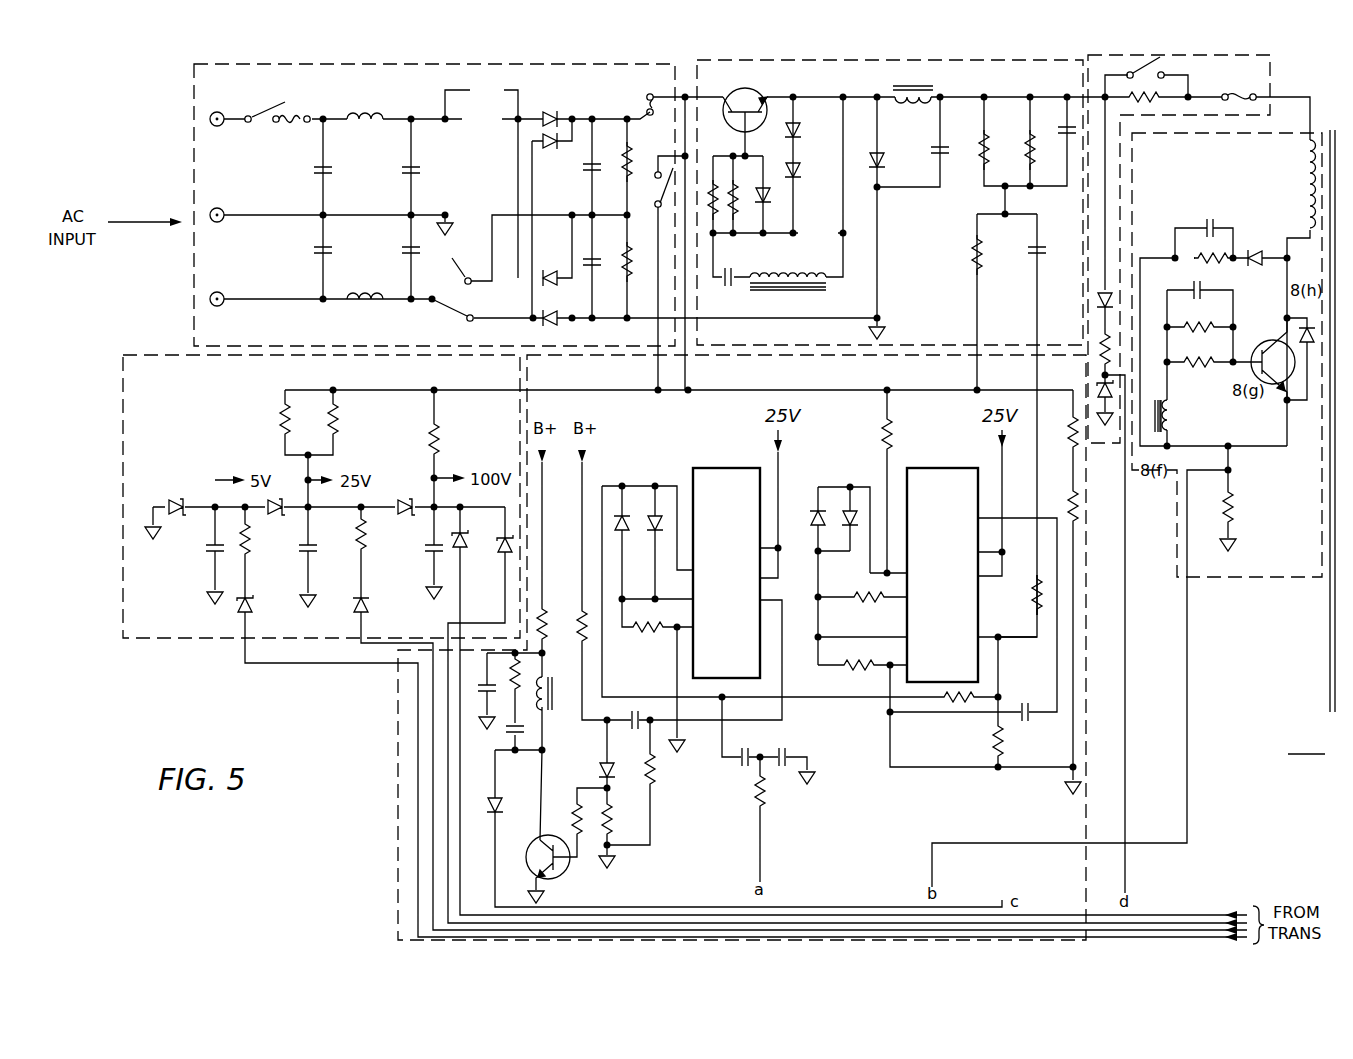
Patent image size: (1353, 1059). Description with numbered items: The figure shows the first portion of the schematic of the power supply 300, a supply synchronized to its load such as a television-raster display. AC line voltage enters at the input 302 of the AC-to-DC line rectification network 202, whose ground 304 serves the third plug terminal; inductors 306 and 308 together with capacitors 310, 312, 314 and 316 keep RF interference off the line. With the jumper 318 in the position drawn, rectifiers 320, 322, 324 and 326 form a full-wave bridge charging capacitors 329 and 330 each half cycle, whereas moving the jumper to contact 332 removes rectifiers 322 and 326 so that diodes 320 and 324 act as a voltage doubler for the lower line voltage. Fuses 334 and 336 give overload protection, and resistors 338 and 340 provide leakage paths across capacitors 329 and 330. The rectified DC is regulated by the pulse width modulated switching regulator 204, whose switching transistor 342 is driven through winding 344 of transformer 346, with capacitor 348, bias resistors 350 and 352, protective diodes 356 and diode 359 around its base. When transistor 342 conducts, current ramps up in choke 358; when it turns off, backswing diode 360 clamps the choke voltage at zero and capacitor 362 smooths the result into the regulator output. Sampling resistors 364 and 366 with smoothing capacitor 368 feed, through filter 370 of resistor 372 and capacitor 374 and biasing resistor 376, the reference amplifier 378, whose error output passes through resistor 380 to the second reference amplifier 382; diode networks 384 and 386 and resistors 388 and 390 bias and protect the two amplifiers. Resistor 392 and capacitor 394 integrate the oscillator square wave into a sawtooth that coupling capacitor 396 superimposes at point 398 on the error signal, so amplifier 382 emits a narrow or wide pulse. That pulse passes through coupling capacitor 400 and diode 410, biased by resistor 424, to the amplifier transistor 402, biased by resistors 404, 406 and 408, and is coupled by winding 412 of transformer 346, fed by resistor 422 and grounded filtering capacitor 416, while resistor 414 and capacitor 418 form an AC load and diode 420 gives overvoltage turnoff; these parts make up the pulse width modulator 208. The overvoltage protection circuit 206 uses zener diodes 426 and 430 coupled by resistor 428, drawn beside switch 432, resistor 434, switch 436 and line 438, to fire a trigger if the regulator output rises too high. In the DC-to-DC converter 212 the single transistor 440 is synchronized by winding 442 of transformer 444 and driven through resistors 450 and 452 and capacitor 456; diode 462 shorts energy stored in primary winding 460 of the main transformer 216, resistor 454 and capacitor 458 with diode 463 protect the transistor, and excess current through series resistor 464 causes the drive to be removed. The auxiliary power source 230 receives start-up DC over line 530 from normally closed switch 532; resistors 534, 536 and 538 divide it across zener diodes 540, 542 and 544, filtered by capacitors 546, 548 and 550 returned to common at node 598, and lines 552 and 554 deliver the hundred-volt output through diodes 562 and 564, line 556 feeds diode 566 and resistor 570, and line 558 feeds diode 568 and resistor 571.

The AC-to-DC line rectification network 202 is at (195, 108).
The pulse width modulated switching regulator 204 is at (795, 352).
The overvoltage protection circuit 206 is at (1272, 68).
The pulse width modulator 208 is at (398, 770).
The DC-to-DC converter 212 is at (1242, 582).
The main transformer 216 is at (1330, 625).
The auxiliary power source 230 is at (147, 355).
The power supply 300 is at (1306, 743).
The input 302 is at (220, 128).
The ground 304 is at (221, 223).
The inductor 306 is at (366, 112).
The inductor 308 is at (367, 307).
The capacitor 310 is at (334, 172).
The capacitor 312 is at (422, 172).
The capacitor 314 is at (312, 251).
The capacitor 316 is at (400, 251).
The jumper 318 is at (433, 305).
The rectifier 320 is at (550, 110).
The rectifier 322 is at (550, 150).
The rectifier 324 is at (550, 270).
The rectifier 326 is at (549, 325).
The capacitor 329 is at (588, 172).
The capacitor 330 is at (588, 256).
The contact 332 is at (466, 276).
The fuse 334 is at (289, 112).
The fuse 336 is at (644, 100).
The resistor 338 is at (631, 152).
The resistor 340 is at (631, 284).
The switching transistor 342 is at (750, 90).
The winding 344 is at (823, 287).
The transformer 346 is at (792, 288).
The capacitor 348 is at (728, 288).
The resistor 350 is at (735, 218).
The resistor 352 is at (708, 185).
The protective diodes 356 is at (805, 170).
The choke 358 is at (928, 92).
The diode 359 is at (772, 200).
The freewheeling or backswing diode 360 is at (884, 158).
The smoothing and storage capacitor 362 is at (932, 150).
The resistor 364 is at (988, 138).
The resistor 366 is at (1034, 138).
The smoothing capacitor 368 is at (1060, 140).
The filter 370 is at (1020, 235).
The resistor 372 is at (968, 254).
The capacitor 374 is at (1030, 255).
The biasing resistor 376 is at (882, 438).
The reference amplifier 378 is at (953, 496).
The resistor 380 is at (955, 702).
The reference amplifier 382 is at (738, 496).
The diode network 384 is at (835, 518).
The diode network 386 is at (640, 520).
The resistor 388 is at (866, 602).
The resistor 390 is at (652, 632).
The resistor 392 is at (756, 792).
The capacitor 394 is at (798, 744).
The capacitor 396 is at (745, 750).
The point 398 is at (726, 696).
The coupling capacitor 400 is at (631, 712).
The transistor 402 is at (525, 860).
The resistor 404 is at (583, 818).
The resistor 406 is at (615, 818).
The resistor 408 is at (656, 775).
The forward biased diode 410 is at (600, 768).
The winding 412 is at (478, 676).
The resistor 414 is at (512, 700).
The filtering capacitor 416 is at (508, 684).
The capacitor 418 is at (506, 735).
The diode 420 is at (490, 808).
The resistor 422 is at (563, 660).
The resistor 424 is at (567, 654).
The zener reference diode 426 is at (1110, 293).
The resistor 428 is at (1102, 340).
The zener reference diode 430 is at (1100, 378).
The switch 432 is at (1160, 70).
The resistor 434 is at (1143, 104).
The switch 436 is at (1240, 92).
The resistor line 438 is at (1127, 626).
The transistor 440 is at (1270, 386).
The winding 442 is at (1170, 428).
The transformer 444 is at (1170, 408).
The resistor 450 is at (1197, 372).
The resistor 452 is at (1205, 323).
The resistor 454 is at (1216, 256).
The capacitor 456 is at (1203, 283).
The capacitor 458 is at (1210, 216).
The primary winding 460 is at (1306, 176).
The diode 462 is at (1300, 334).
The diode 463 is at (1266, 250).
The resistor 464 is at (1236, 498).
The line 530 is at (612, 394).
The normally closed switch 532 is at (656, 206).
The resistor 534 is at (440, 436).
The resistor 536 is at (339, 418).
The resistor 538 is at (279, 418).
The zener diode 540 is at (175, 498).
The zener diode 542 is at (276, 516).
The zener diode 544 is at (407, 498).
The filtering capacitor 546 is at (205, 550).
The filtering capacitor 548 is at (312, 548).
The filtering capacitor 550 is at (425, 547).
The line 552 is at (482, 607).
The line 554 is at (446, 600).
The line 556 is at (357, 578).
The line 558 is at (240, 648).
The diode 562 is at (503, 552).
The diode 564 is at (457, 515).
The diode 566 is at (356, 610).
The diode 568 is at (238, 608).
The resistor 570 is at (322, 554).
The resistor 571 is at (266, 548).
The node 598 is at (292, 605).